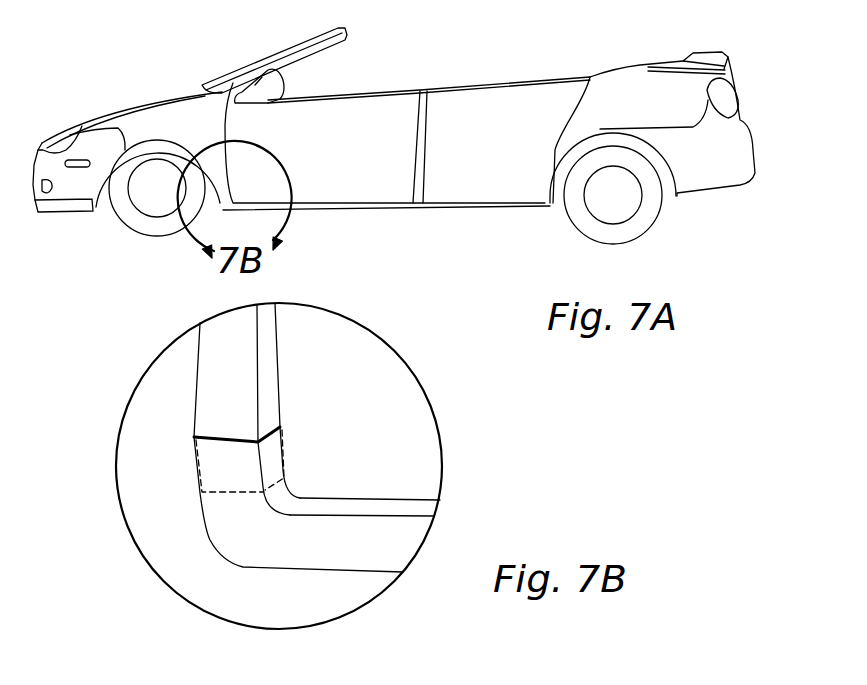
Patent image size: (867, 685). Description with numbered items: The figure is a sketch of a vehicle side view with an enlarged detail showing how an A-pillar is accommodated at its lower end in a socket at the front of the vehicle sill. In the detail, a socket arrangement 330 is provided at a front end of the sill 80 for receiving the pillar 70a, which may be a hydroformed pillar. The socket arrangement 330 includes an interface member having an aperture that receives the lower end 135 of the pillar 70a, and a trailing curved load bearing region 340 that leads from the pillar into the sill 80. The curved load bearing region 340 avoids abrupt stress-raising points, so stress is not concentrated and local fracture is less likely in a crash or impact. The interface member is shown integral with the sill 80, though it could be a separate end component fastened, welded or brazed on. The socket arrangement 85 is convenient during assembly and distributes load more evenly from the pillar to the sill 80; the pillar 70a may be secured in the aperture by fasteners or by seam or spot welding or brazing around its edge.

The socket arrangement 330 is at (462, 413).
The pillar 70a is at (267, 388).
The lower end of the pillar 135 is at (200, 464).
The curved load bearing region 340 is at (288, 498).
The sill 80 is at (401, 492).
The socket arrangement 85 is at (217, 522).